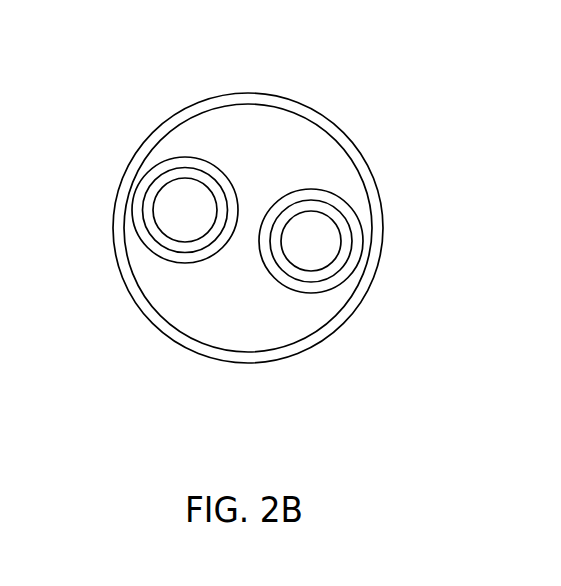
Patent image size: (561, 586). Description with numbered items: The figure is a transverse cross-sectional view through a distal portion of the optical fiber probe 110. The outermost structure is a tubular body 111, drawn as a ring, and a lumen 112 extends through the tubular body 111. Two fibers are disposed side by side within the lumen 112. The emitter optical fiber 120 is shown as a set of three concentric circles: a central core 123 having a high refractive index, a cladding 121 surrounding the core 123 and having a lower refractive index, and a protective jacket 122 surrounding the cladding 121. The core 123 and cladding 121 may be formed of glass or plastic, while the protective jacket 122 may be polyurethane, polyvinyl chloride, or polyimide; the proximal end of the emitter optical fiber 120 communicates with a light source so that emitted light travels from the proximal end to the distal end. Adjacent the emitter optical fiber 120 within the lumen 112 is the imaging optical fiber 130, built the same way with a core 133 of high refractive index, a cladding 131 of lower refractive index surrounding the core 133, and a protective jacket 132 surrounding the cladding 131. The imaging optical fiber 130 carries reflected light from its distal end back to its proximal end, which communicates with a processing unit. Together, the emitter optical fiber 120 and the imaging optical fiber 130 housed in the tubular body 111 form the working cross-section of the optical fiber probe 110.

The optical fiber probe 110 is at (452, 100).
The tubular body 111 is at (371, 172).
The lumen 112 is at (298, 132).
The emitter optical fiber 120 is at (190, 157).
The cladding 121 is at (155, 233).
The protective jacket 122 is at (185, 257).
The core 123 is at (170, 213).
The imaging optical fiber 130 is at (365, 260).
The cladding 131 is at (347, 245).
The protective jacket 132 is at (318, 289).
The core 133 is at (325, 255).